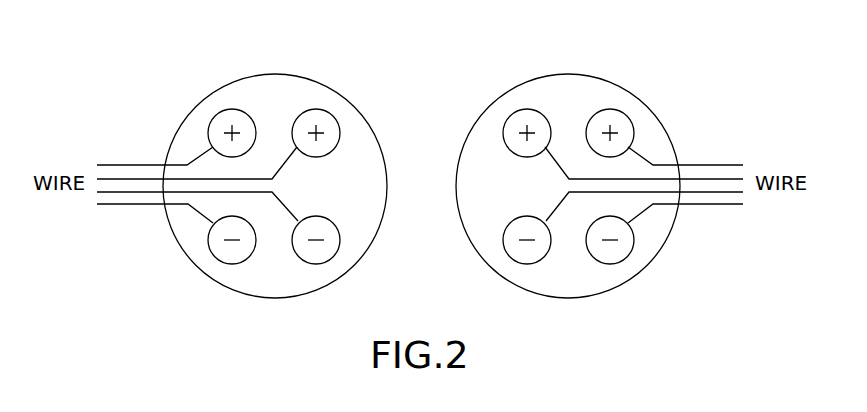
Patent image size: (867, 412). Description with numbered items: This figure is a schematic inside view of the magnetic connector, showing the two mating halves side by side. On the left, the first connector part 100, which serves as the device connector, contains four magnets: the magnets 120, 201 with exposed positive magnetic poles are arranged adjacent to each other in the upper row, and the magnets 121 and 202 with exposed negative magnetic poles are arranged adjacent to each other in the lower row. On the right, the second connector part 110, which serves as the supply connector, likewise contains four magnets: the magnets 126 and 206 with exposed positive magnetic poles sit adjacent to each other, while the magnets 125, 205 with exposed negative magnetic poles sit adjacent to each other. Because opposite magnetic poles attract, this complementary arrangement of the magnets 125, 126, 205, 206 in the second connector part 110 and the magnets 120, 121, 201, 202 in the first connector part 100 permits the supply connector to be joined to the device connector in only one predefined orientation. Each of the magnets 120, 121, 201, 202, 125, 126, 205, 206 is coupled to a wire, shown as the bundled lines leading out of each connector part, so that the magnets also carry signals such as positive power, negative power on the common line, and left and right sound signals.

The first connector part 100 is at (247, 75).
The second connector part 110 is at (595, 75).
The magnet 120 is at (215, 114).
The magnet 121 is at (225, 263).
The magnet 201 is at (321, 109).
The magnet 202 is at (335, 253).
The magnet 125 is at (525, 263).
The magnet 126 is at (519, 110).
The magnet 205 is at (613, 263).
The magnet 206 is at (625, 114).